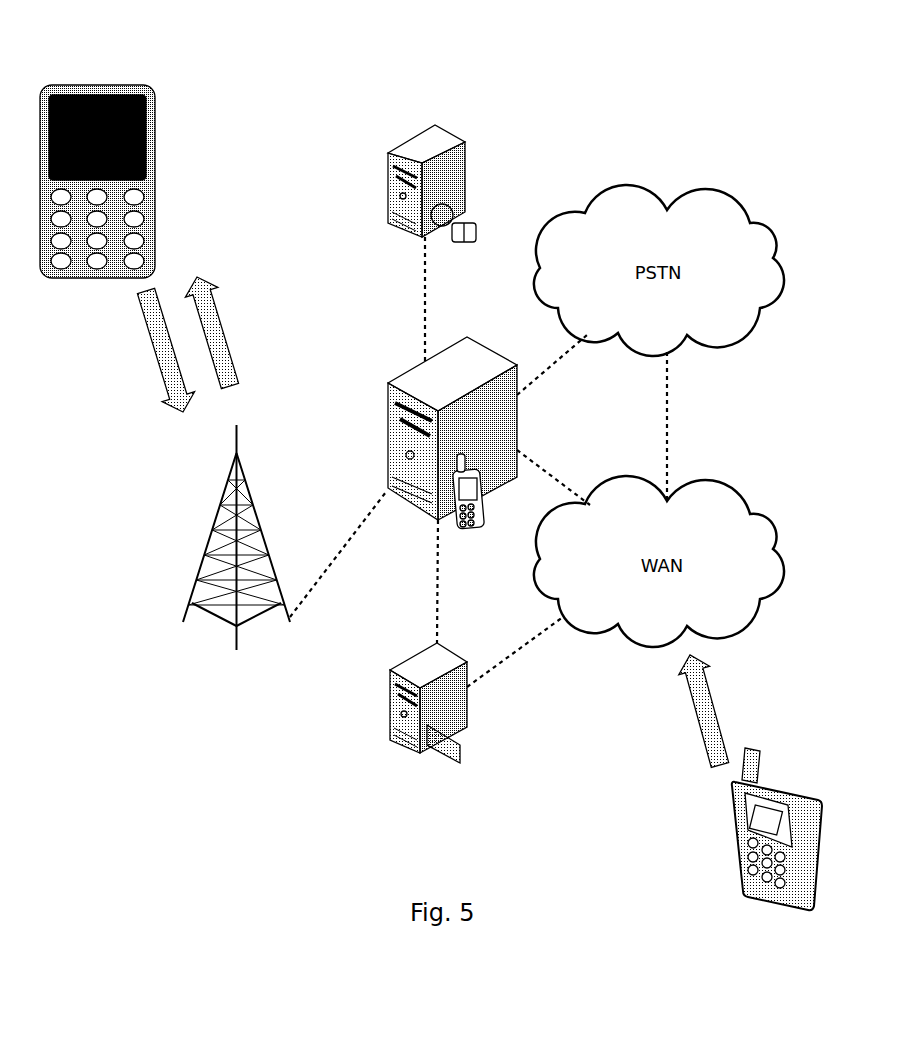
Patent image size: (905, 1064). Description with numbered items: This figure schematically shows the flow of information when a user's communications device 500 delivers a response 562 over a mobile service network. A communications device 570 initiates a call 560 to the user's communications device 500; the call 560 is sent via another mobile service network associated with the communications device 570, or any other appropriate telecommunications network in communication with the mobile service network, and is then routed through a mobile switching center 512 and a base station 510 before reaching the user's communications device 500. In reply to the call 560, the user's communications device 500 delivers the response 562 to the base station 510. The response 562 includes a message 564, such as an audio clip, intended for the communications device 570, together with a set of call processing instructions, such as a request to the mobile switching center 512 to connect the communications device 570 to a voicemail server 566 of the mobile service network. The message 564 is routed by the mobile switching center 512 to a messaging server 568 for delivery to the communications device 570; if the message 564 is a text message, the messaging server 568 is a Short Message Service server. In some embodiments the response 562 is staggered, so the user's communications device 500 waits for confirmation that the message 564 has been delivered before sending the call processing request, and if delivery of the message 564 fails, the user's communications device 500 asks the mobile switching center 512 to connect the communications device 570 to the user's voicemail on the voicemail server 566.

The user's communications device 500 is at (144, 146).
The base station 510 is at (186, 540).
The mobile switching center 512 is at (405, 415).
The call 560 is at (504, 494).
The response 562 is at (127, 377).
The message 564 is at (491, 761).
The voicemail server 566 is at (487, 164).
The messaging server 568 is at (368, 719).
The communications device 570 is at (721, 839).